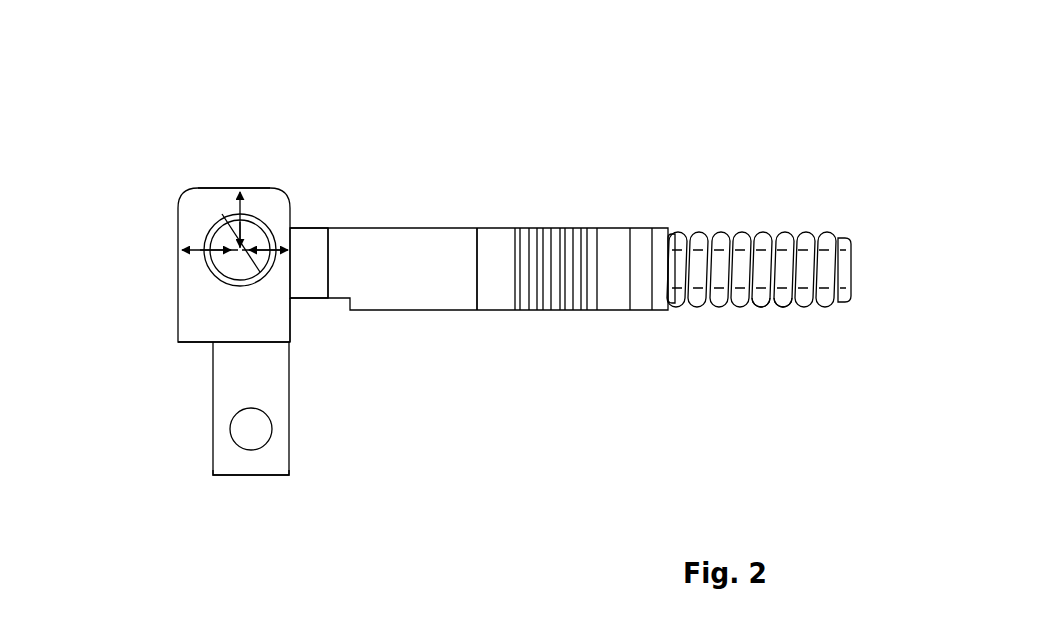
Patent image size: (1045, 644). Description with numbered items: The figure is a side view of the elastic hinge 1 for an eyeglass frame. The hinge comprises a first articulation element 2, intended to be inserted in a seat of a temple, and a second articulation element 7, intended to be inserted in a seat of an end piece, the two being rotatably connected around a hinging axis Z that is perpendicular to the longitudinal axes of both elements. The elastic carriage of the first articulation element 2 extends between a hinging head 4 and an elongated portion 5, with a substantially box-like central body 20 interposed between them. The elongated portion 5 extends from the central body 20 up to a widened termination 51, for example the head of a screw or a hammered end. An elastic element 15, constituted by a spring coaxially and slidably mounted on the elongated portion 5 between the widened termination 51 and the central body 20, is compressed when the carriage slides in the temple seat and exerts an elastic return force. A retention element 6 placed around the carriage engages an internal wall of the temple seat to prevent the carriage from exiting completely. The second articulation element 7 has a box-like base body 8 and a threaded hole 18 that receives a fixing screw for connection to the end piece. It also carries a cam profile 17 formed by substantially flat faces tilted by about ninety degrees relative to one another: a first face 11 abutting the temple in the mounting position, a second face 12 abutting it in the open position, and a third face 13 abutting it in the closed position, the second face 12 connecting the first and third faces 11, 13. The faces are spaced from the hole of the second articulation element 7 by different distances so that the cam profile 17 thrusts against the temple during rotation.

The elastic hinge 1 is at (94, 86).
The first articulation element 2 is at (530, 110).
The hinging head 4 is at (327, 227).
The elongated portion 5 is at (763, 254).
The retention element 6 is at (589, 212).
The second articulation element 7 is at (320, 431).
The base body 8 is at (227, 450).
The first face 11 is at (291, 313).
The second face 12 is at (224, 188).
The third face 13 is at (178, 322).
The elastic element 15 is at (786, 316).
The cam profile 17 is at (158, 245).
The threaded hole 18 is at (268, 451).
The central body 20 is at (449, 290).
The widened termination 51 is at (842, 262).
The hinging axis Z is at (238, 262).